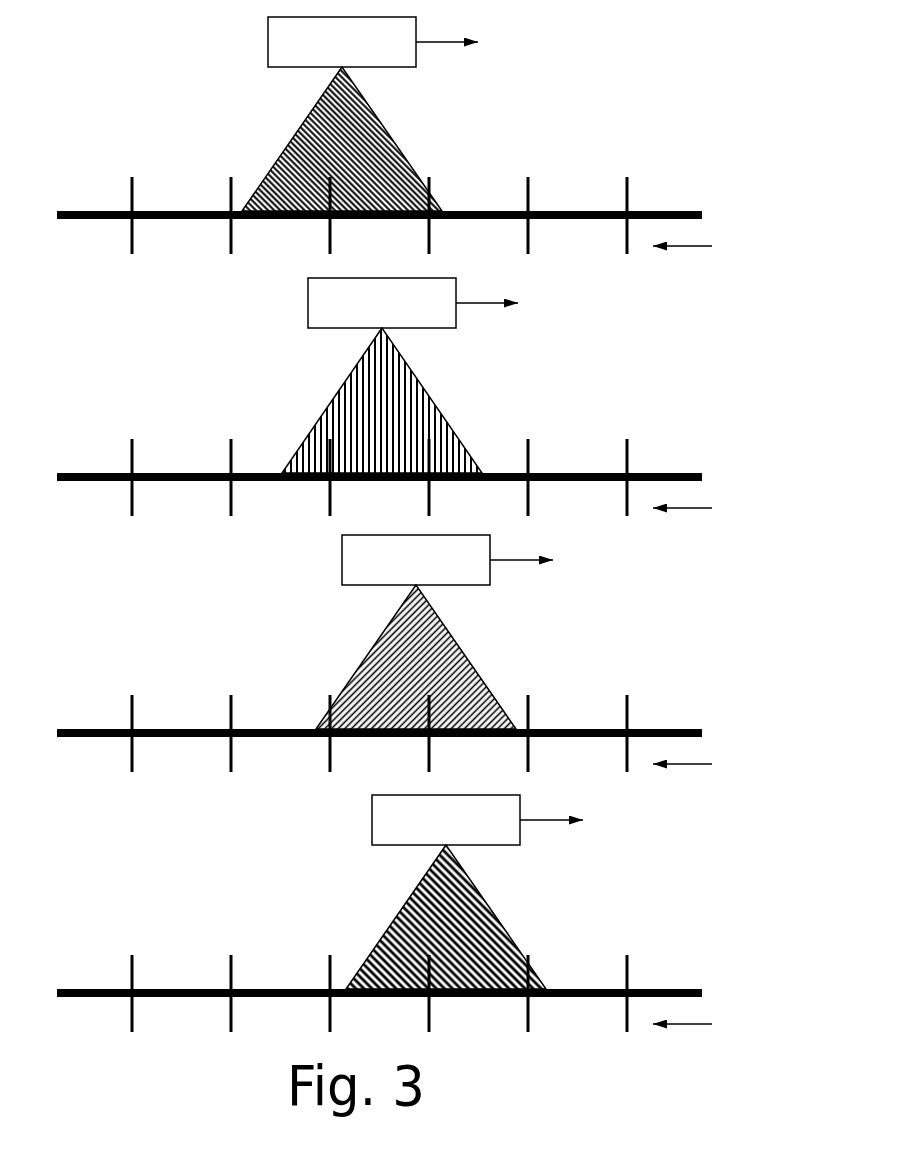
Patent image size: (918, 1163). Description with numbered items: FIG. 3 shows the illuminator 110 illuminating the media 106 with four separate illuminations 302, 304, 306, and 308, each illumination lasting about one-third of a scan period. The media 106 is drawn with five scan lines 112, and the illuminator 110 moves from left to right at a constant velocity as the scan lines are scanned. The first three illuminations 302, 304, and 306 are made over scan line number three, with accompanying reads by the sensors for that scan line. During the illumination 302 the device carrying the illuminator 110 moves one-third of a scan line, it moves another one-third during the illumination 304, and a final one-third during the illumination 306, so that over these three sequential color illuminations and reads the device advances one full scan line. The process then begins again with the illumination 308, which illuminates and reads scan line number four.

The media 106 is at (95, 218).
The illuminator 110 is at (425, 431).
The scan lines 112 is at (702, 635).
The illumination 302 is at (391, 131).
The illumination 304 is at (437, 404).
The illumination 306 is at (470, 657).
The illumination 308 is at (500, 917).